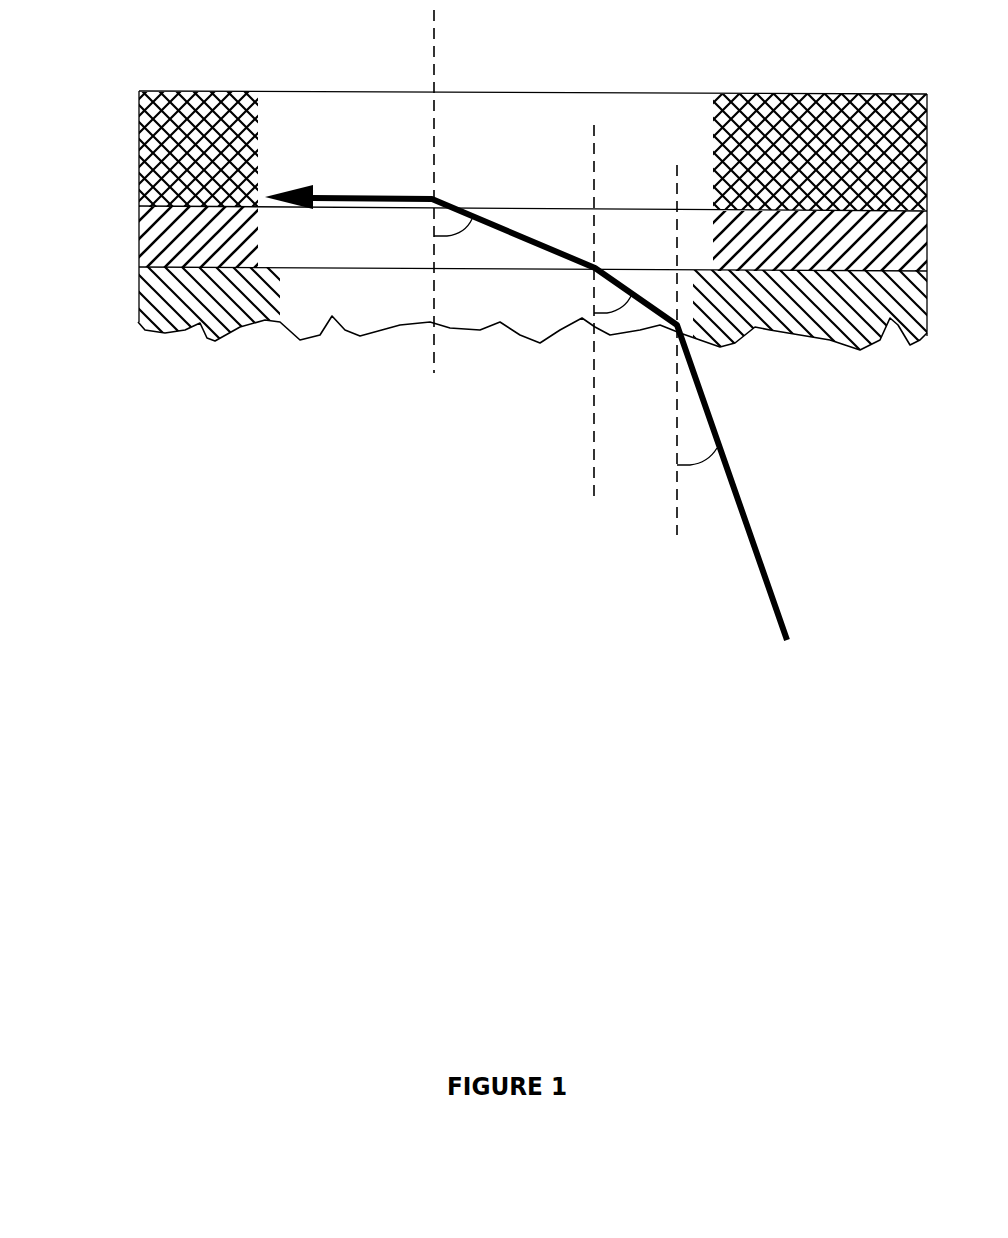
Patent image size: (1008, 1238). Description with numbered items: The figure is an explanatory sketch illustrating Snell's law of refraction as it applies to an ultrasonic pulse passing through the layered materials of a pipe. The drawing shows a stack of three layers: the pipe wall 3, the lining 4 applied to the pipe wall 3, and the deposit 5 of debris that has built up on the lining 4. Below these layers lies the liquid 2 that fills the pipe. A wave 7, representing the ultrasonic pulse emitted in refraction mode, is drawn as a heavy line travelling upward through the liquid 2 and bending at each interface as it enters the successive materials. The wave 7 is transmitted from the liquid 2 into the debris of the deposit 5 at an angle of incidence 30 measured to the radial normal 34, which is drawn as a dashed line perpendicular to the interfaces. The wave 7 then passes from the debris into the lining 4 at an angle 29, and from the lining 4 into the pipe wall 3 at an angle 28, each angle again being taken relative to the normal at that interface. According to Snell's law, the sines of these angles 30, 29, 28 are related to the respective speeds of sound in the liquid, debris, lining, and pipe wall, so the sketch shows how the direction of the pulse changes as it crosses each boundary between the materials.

The liquid 2 is at (469, 580).
The pipe wall 3 is at (138, 152).
The lining 4 is at (138, 227).
The deposit 5 is at (138, 285).
The wave 7 is at (745, 508).
The angle 28 is at (452, 237).
The angle 29 is at (607, 316).
The angle of incidence 30 is at (695, 467).
The radial normal 34 is at (433, 377).